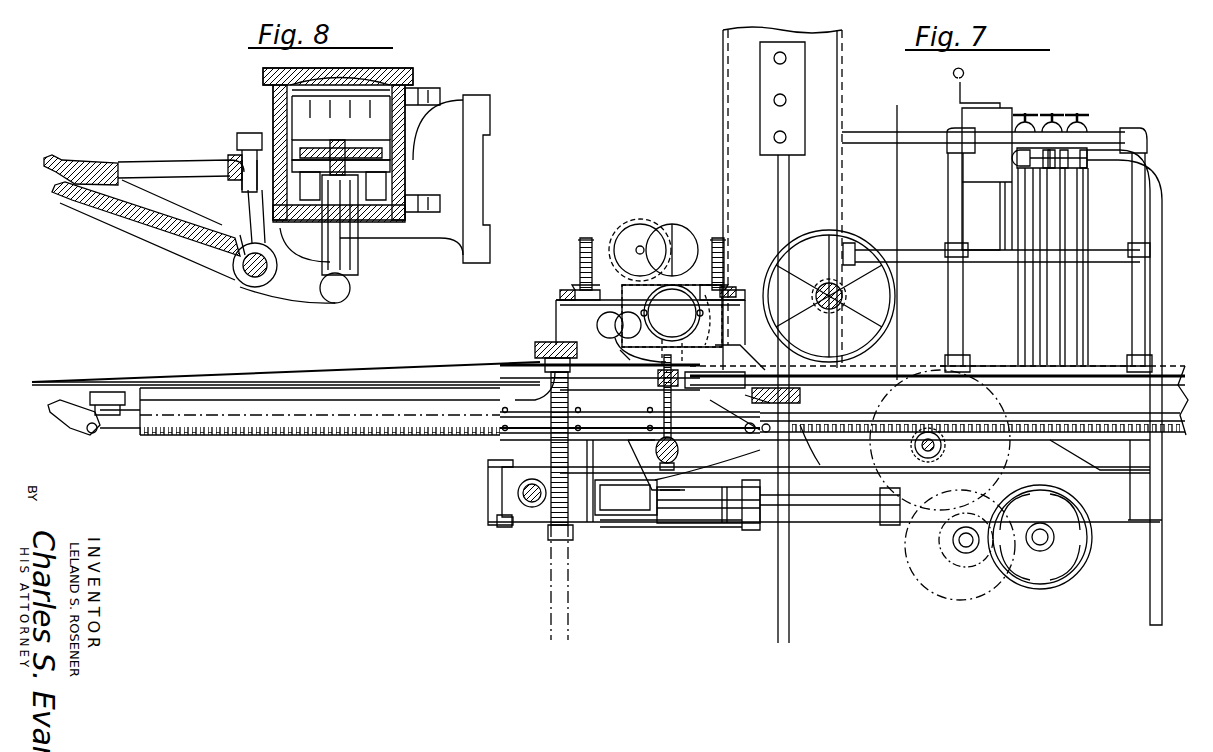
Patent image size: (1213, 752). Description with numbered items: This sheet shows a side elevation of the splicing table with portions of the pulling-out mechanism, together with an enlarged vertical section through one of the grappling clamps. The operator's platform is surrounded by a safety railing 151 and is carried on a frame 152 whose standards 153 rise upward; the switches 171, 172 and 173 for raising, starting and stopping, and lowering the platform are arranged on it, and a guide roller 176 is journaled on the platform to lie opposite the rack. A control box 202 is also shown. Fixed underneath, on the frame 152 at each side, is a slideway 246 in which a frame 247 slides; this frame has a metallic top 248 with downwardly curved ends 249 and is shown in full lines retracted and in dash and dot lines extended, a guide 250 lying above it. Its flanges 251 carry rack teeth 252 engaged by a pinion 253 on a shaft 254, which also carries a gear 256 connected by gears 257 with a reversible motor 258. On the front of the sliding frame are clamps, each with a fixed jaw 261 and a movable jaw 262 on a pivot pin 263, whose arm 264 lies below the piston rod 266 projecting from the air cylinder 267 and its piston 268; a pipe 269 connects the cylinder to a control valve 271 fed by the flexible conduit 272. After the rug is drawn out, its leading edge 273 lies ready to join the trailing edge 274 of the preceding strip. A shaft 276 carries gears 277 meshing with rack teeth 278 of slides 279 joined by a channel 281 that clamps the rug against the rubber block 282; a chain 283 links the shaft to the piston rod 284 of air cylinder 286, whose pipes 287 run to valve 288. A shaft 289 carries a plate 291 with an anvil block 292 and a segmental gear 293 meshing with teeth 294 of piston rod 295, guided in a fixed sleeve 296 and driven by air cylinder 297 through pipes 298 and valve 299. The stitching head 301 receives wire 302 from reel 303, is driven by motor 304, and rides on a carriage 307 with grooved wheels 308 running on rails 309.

In FIG. 7, the safety railing 151 is at (1145, 298).
In FIG. 7, the frame 152 is at (556, 304).
In FIG. 7, the standards 153 is at (742, 72).
In FIG. 7, the switch 171 is at (786, 58).
In FIG. 7, the start and stop switch 172 is at (786, 137).
In FIG. 7, the switch 173 is at (786, 100).
In FIG. 7, the guide roller 176 is at (826, 232).
In FIG. 7, the control box 202 is at (1015, 92).
In FIG. 7, the slideway 246 is at (500, 435).
In FIG. 7, the frame 247 is at (1120, 409).
In FIG. 7, the metallic top 248 is at (1190, 368).
In FIG. 7, the end 249 is at (70, 390).
In FIG. 7, the guide 250 is at (1100, 366).
In FIG. 7, the flanges 251 is at (880, 412).
In FIG. 7, the rack teeth 252 is at (812, 445).
In FIG. 7, the pinion 253 is at (943, 448).
In FIG. 7, the shaft 254 is at (915, 447).
In FIG. 7, the gear 256 is at (1010, 448).
In FIG. 7, the gears 257 is at (960, 560).
In FIG. 7, the reversible motor 258 is at (1040, 589).
In FIG. 8, the fixed jaw 261 is at (72, 163).
In FIG. 8, the movable jaw 262 is at (70, 200).
In FIG. 8, the pivot pin 263 is at (255, 280).
In FIG. 8, the arm 264 is at (344, 296).
In FIG. 8, the piston rod 266 is at (358, 262).
In FIG. 8, the air cylinder 267 is at (405, 128).
In FIG. 8, the piston 268 is at (405, 186).
In FIG. 8, the pipe 269 is at (440, 94).
In FIG. 7, the pipe 269 is at (1040, 237).
In FIG. 7, the control valve 271 is at (1030, 122).
In FIG. 7, the flexible conduit 272 is at (1150, 558).
In FIG. 7, the leading edge 273 is at (622, 352).
In FIG. 7, the trailing edge 274 is at (700, 388).
In FIG. 7, the shaft 276 is at (532, 502).
In FIG. 7, the gear 277 is at (502, 495).
In FIG. 7, the rack teeth 278 is at (551, 450).
In FIG. 7, the slide 279 is at (573, 535).
In FIG. 7, the channel 281 is at (515, 392).
In FIG. 7, the rubber block 282 is at (535, 350).
In FIG. 7, the chain 283 is at (497, 525).
In FIG. 7, the piston rod 284 is at (895, 525).
In FIG. 7, the air cylinder 286 is at (735, 527).
In FIG. 7, the pipes 287 is at (1050, 212).
In FIG. 7, the valve 288 is at (1058, 122).
In FIG. 7, the shaft 289 is at (680, 452).
In FIG. 7, the plate 291 is at (664, 400).
In FIG. 7, the anvil block 292 is at (620, 388).
In FIG. 7, the segmental gear 293 is at (620, 440).
In FIG. 7, the teeth 294 is at (742, 458).
In FIG. 7, the piston rod 295 is at (705, 505).
In FIG. 7, the fixed sleeve 296 is at (630, 505).
In FIG. 7, the air cylinder 297 is at (845, 505).
In FIG. 7, the pipes 298 is at (1040, 188).
In FIG. 7, the valve 299 is at (1090, 133).
In FIG. 7, the head 301 is at (686, 321).
In FIG. 7, the wire 302 is at (600, 318).
In FIG. 7, the reel 303 is at (618, 228).
In FIG. 7, the motor 304 is at (660, 226).
In FIG. 7, the carriage 307 is at (712, 240).
In FIG. 7, the grooved wheels 308 is at (580, 242).
In FIG. 7, the rails 309 is at (570, 286).